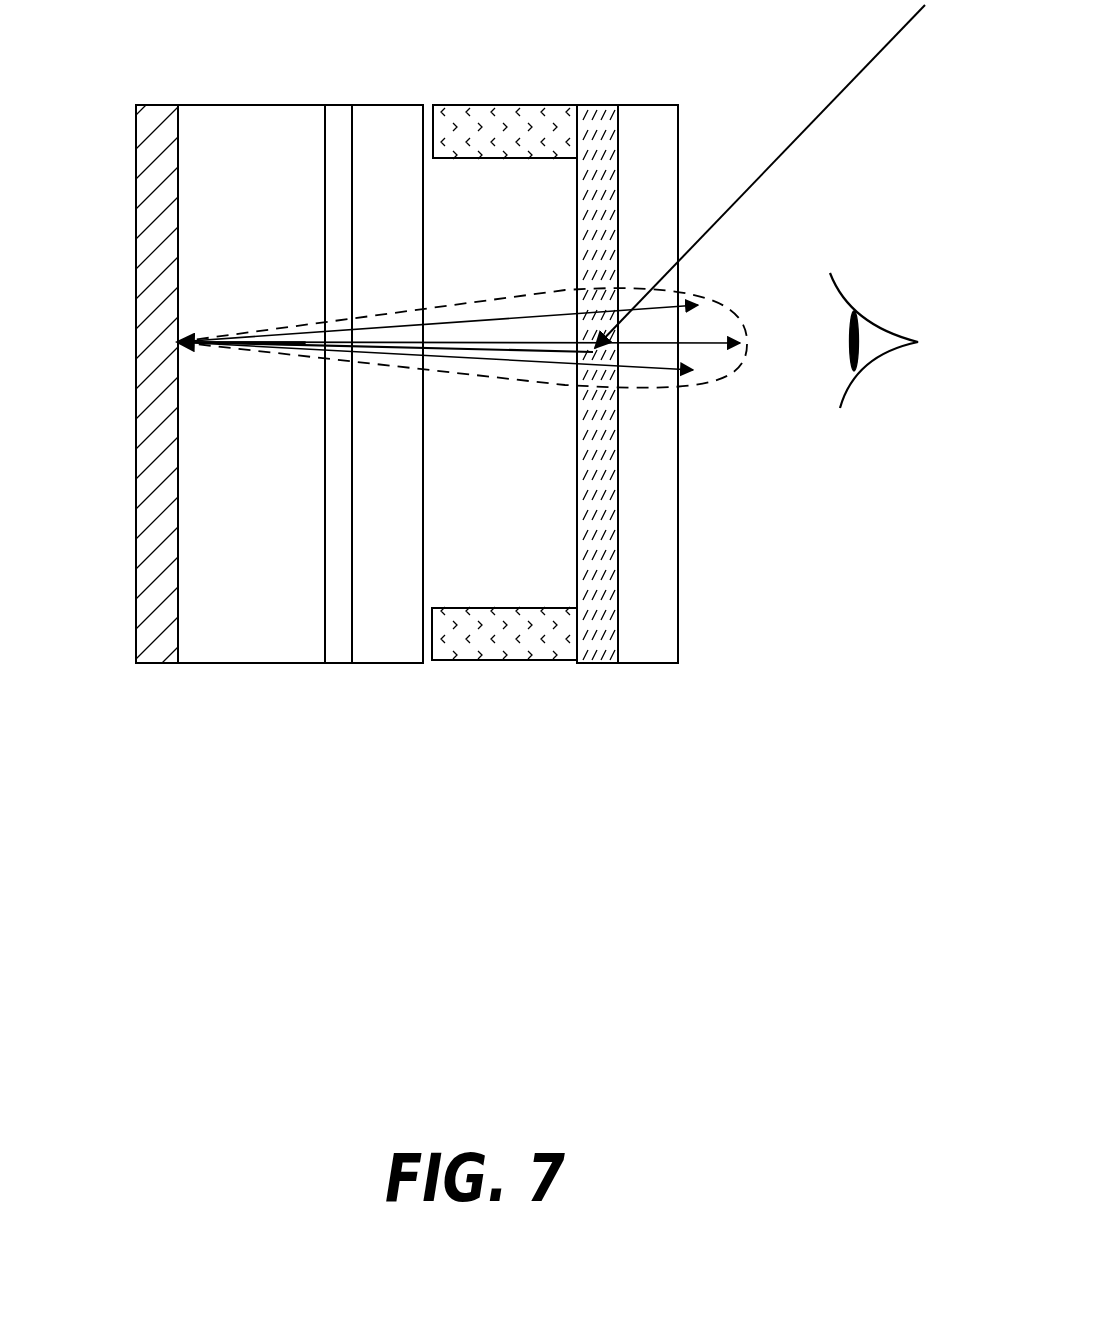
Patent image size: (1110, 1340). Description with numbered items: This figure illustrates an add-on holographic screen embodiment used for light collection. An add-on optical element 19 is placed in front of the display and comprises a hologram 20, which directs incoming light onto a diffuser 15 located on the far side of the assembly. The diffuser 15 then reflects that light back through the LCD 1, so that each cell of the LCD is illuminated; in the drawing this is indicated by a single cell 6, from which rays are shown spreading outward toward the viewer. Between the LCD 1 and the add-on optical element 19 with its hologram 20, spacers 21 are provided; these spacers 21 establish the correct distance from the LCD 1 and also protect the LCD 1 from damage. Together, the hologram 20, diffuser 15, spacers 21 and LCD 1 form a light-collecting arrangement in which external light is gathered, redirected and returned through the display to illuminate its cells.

The LCD 1 is at (390, 638).
The single cell 6 is at (335, 366).
The diffuser 15 is at (153, 449).
The add-on optical element 19 is at (645, 573).
The hologram 20 is at (592, 405).
The spacers 21 is at (530, 125).